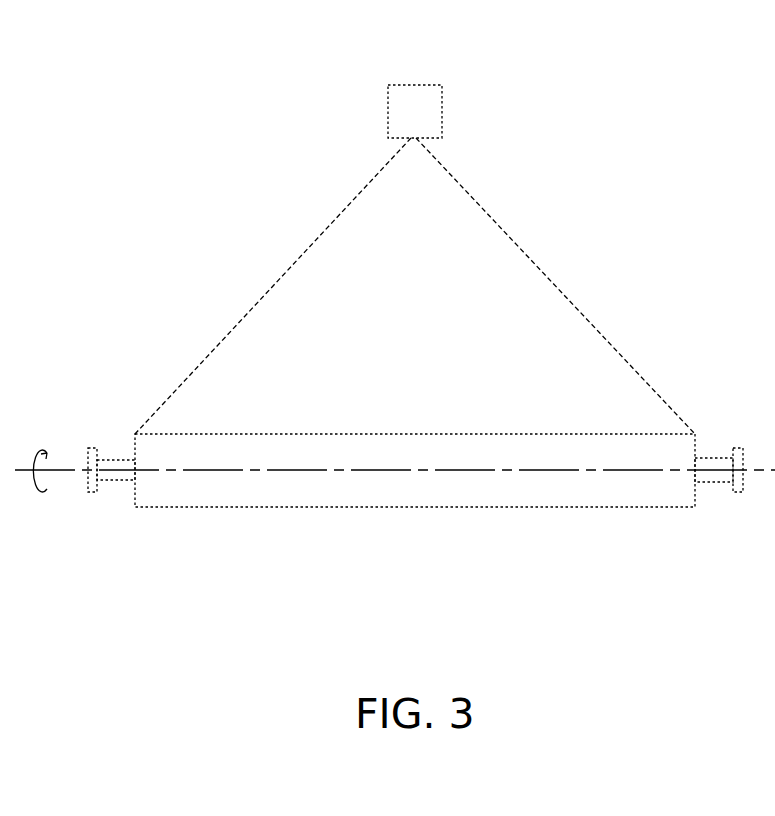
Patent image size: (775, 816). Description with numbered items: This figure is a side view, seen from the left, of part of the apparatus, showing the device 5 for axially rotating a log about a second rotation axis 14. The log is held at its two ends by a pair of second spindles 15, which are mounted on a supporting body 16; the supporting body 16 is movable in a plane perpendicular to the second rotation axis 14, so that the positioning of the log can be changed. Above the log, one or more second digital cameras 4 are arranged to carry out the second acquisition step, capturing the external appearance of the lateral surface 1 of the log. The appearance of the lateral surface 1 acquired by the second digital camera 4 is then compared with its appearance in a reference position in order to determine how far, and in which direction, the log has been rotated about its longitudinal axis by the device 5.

The lateral surface 1 is at (218, 490).
The second digital camera 4 is at (410, 110).
The device for axially rotating the log 5 is at (625, 605).
The second rotation axis 14 is at (765, 470).
The second spindles 15 is at (117, 482).
The supporting body 16 is at (90, 468).